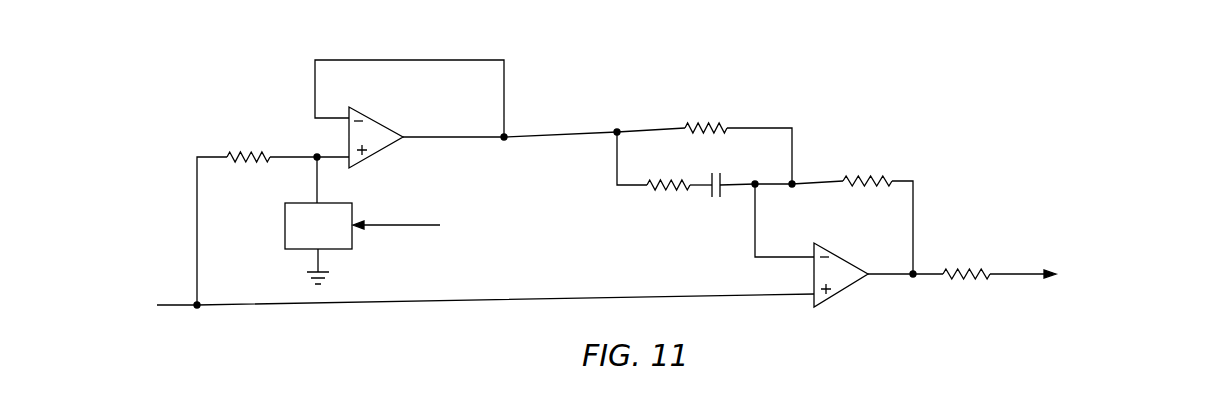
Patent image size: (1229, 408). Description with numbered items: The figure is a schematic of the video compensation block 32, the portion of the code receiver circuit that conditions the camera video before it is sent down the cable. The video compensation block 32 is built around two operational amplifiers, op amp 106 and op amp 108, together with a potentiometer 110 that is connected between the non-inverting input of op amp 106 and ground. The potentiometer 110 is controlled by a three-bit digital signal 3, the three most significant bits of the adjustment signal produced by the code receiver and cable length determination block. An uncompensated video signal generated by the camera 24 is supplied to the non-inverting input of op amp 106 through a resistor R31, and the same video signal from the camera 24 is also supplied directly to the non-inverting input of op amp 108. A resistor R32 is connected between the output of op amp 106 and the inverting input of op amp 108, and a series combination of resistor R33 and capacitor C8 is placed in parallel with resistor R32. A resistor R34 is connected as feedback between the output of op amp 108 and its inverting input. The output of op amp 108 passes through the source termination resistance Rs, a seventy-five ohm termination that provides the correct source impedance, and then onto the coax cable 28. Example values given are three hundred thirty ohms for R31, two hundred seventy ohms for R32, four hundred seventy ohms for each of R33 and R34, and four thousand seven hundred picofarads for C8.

The camera 24 is at (443, 303).
The resistor R31 is at (234, 153).
The operational amplifier 106 is at (383, 120).
The potentiometer 110 is at (285, 229).
The three-bit digital signal 3 is at (378, 238).
The resistor R32 is at (720, 128).
The resistor R33 is at (660, 190).
The capacitor C8 is at (722, 179).
The resistor R34 is at (886, 178).
The operational amplifier 108 is at (845, 256).
The source termination resistance Rs is at (965, 270).
The coax cable 28 is at (1081, 271).
The video compensation block 32 is at (946, 96).